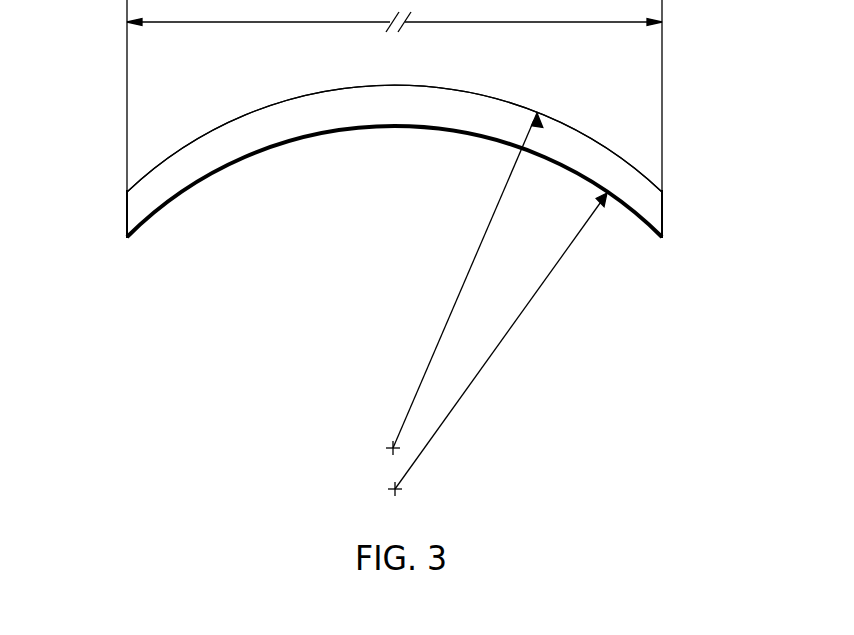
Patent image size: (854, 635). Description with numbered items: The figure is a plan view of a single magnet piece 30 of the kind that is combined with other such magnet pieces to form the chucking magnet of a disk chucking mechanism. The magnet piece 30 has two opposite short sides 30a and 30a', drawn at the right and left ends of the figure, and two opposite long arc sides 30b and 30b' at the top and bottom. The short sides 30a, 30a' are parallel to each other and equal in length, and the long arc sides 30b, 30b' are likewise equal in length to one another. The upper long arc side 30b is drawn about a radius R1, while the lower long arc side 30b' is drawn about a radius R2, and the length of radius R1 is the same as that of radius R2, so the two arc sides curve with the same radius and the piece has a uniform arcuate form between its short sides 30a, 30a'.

The magnet piece 30 is at (445, 107).
The long arc side 30b is at (394, 125).
The long arc side 30b' is at (394, 181).
The short side 30a is at (714, 214).
The short side 30a' is at (79, 234).
The radius of long arc side 30b R1 is at (464, 284).
The radius of long arc side 30b' R2 is at (497, 344).